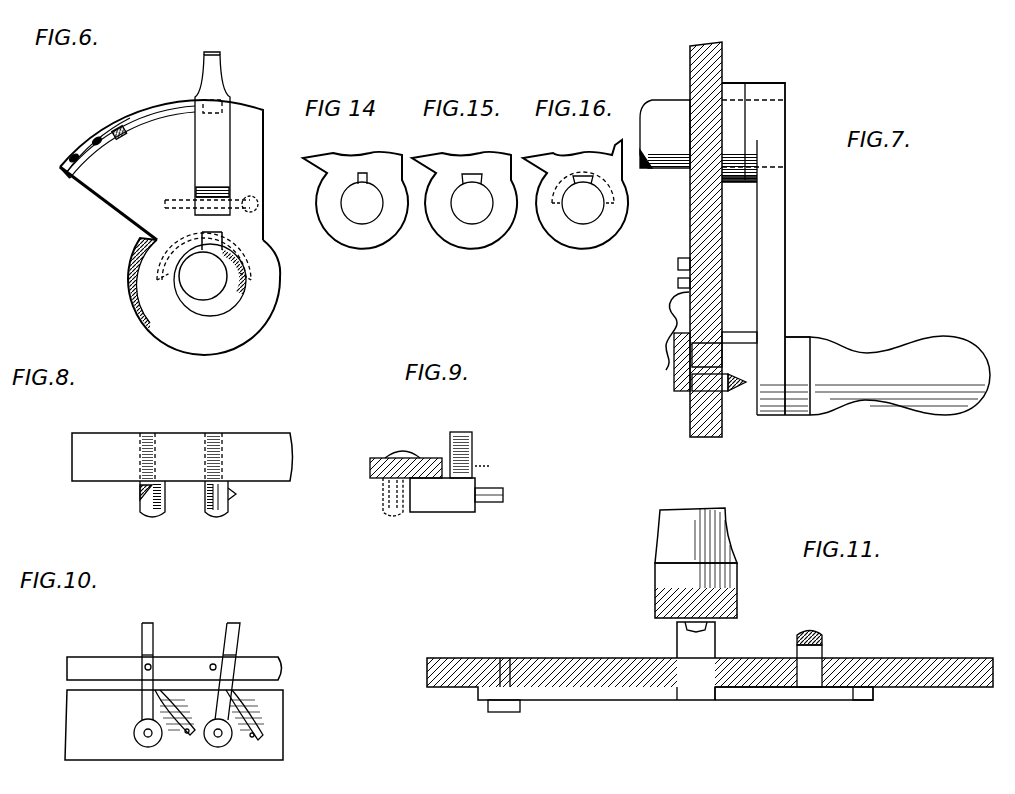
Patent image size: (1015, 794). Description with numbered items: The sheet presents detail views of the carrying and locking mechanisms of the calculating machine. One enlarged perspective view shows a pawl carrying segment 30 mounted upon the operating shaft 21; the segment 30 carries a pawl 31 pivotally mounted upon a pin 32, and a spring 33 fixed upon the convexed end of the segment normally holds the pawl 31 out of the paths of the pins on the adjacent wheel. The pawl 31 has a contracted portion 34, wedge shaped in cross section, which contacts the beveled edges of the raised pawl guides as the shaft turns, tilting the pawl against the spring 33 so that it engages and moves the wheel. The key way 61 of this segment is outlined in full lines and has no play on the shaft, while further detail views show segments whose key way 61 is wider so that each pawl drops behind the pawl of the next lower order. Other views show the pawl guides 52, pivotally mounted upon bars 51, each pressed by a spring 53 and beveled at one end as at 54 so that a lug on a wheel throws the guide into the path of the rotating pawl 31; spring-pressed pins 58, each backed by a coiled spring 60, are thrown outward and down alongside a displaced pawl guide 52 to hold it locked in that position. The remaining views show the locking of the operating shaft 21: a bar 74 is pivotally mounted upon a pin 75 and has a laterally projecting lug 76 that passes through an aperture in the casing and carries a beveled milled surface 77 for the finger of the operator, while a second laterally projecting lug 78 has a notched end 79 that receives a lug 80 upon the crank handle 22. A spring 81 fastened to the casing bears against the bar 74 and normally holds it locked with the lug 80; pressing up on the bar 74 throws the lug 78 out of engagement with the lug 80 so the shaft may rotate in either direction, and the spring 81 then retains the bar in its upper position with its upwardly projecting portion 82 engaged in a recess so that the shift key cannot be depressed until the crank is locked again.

In FIG. 7, the operating shaft 21 is at (656, 108).
In FIG. 7, the crank handle 22 is at (772, 228).
In FIG. 11, the crank handle 22 is at (727, 532).
In FIG. 6, the pawl carrying segment 30 is at (122, 198).
In FIG. 14, the pawl carrying segment 30 is at (385, 238).
In FIG. 15, the pawl carrying segment 30 is at (448, 238).
In FIG. 16, the pawl carrying segment 30 is at (562, 230).
In FIG. 6, the pawl 31 is at (224, 125).
In FIG. 6, the pin 32 is at (258, 204).
In FIG. 6, the spring 33 is at (92, 140).
In FIG. 6, the contracted portion 34 is at (210, 66).
In FIG. 9, the bar 51 is at (416, 458).
In FIG. 8, the pawl guide 52 is at (208, 512).
In FIG. 9, the pawl guide 52 is at (451, 502).
In FIG. 10, the pawl guide 52 is at (133, 680).
In FIG. 10, the spring 53 is at (248, 710).
In FIG. 8, the beveled end 54 is at (154, 496).
In FIG. 9, the beveled end 54 is at (492, 504).
In FIG. 10, the beveled end 54 is at (233, 625).
In FIG. 8, the pin 58 is at (224, 486).
In FIG. 9, the pin 58 is at (500, 467).
In FIG. 10, the pin 58 is at (155, 663).
In FIG. 8, the coiled spring 60 is at (216, 442).
In FIG. 9, the coiled spring 60 is at (470, 448).
In FIG. 6, the key way 61 is at (213, 247).
In FIG. 14, the key way 61 is at (365, 180).
In FIG. 15, the key way 61 is at (476, 180).
In FIG. 16, the key way 61 is at (587, 180).
In FIG. 7, the bar 74 is at (677, 384).
In FIG. 11, the bar 74 is at (654, 690).
In FIG. 11, the pin 75 is at (512, 712).
In FIG. 7, the laterally projecting lug 76 is at (712, 386).
In FIG. 11, the laterally projecting lug 76 is at (815, 650).
In FIG. 7, the beveled milled surface 77 is at (740, 397).
In FIG. 11, the beveled milled surface 77 is at (812, 632).
In FIG. 7, the second laterally projecting lug 78 is at (731, 330).
In FIG. 11, the second laterally projecting lug 78 is at (693, 644).
In FIG. 11, the notched end 79 is at (712, 628).
In FIG. 7, the lug 80 is at (759, 337).
In FIG. 11, the lug 80 is at (695, 615).
In FIG. 7, the spring 81 is at (668, 299).
In FIG. 11, the upwardly projecting portion 82 is at (866, 701).